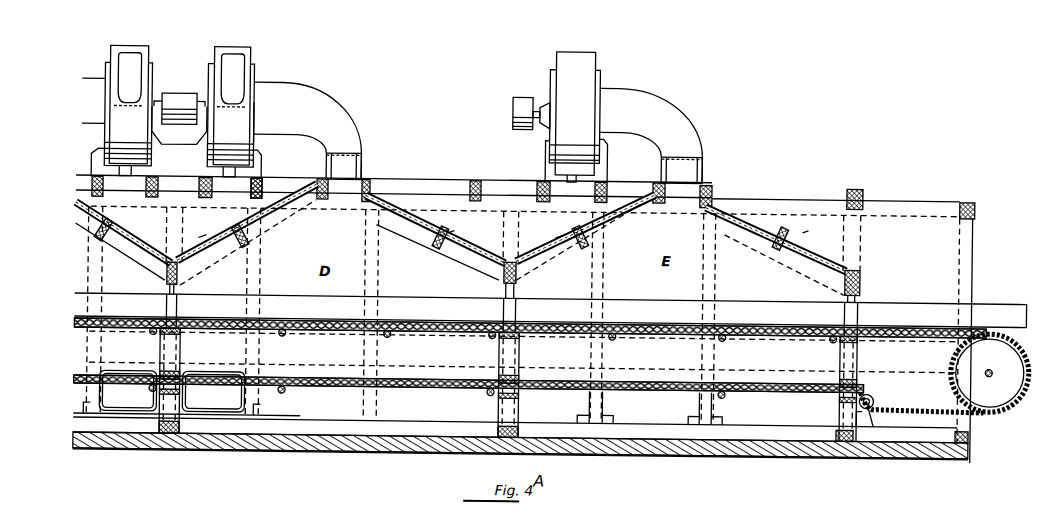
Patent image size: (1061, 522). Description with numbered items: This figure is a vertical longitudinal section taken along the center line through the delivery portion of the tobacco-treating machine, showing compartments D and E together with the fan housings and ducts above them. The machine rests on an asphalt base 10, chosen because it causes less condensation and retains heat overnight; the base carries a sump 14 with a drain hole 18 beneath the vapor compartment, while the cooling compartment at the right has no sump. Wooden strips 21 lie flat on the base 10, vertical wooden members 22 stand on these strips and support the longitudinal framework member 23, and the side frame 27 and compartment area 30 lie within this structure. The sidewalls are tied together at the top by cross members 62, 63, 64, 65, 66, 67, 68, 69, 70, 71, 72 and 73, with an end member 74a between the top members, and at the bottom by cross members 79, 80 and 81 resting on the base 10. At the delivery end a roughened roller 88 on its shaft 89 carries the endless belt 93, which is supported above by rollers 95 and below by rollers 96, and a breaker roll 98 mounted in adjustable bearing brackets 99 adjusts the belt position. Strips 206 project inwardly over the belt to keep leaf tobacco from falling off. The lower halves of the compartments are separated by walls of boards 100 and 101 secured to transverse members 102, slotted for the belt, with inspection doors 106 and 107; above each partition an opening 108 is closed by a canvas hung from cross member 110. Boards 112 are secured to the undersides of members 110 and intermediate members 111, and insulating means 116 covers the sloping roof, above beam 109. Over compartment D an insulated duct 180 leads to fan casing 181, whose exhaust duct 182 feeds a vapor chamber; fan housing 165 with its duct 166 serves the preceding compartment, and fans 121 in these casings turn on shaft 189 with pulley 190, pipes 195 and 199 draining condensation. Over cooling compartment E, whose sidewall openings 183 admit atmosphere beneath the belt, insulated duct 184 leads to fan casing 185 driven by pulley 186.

The base 10 is at (157, 448).
The sump 14 is at (408, 418).
The drain hole 18 is at (340, 449).
The longitudinally disposed strip 21 is at (73, 417).
The vertically disposed wooden member 22 is at (972, 240).
The longitudinally disposed framework member 23 is at (783, 191).
The hanger frame 27 is at (86, 360).
The compartment 30 is at (745, 284).
The cross member 62 is at (73, 175).
The cross member 63 is at (155, 178).
The cross member 64 is at (196, 178).
The cross member 65 is at (259, 178).
The cross member 66 is at (315, 176).
The cross member 67 is at (366, 176).
The cross member 68 is at (469, 176).
The cross member 69 is at (535, 176).
The cross member 70 is at (603, 176).
The cross member 71 is at (663, 178).
The cross member 72 is at (710, 178).
The cross member 73 is at (852, 180).
The end member 74a is at (972, 195).
The cross member 79 is at (180, 427).
The cross member 80 is at (498, 428).
The cross member 81 is at (836, 429).
The roughened roller or drum 88 is at (989, 372).
The shaft 89 is at (990, 364).
The endless belt 93 is at (921, 392).
The roller 95 is at (151, 334).
The roller 96 is at (285, 387).
The breaker roll 98 is at (873, 397).
The adjustable bearing bracket 99 is at (872, 407).
The board 100 is at (159, 354).
The board 101 is at (179, 344).
The transverse member 102 is at (179, 332).
The inspection door 106 is at (127, 390).
The inspection door 107 is at (213, 391).
The opening 108 is at (164, 297).
The beam 109 is at (175, 306).
The cross member 110 is at (176, 266).
The intermediate member 111 is at (451, 239).
The board 112 is at (80, 228).
The insulating means 116 is at (468, 228).
The fan 121 is at (128, 56).
The fan housing 165 is at (101, 133).
The duct 166 is at (110, 44).
The insulated duct 180 is at (356, 138).
The fan casing 181 is at (250, 139).
The exhaust duct 182 is at (237, 45).
The opening 183 is at (667, 408).
The insulated duct 184 is at (692, 130).
The fan casing 185 is at (582, 46).
The pulley 186 is at (513, 93).
The shaft 189 is at (200, 100).
The pulley 190 is at (178, 92).
The pipe 195 is at (124, 183).
The pipe 199 is at (212, 183).
The strip 206 is at (1008, 297).